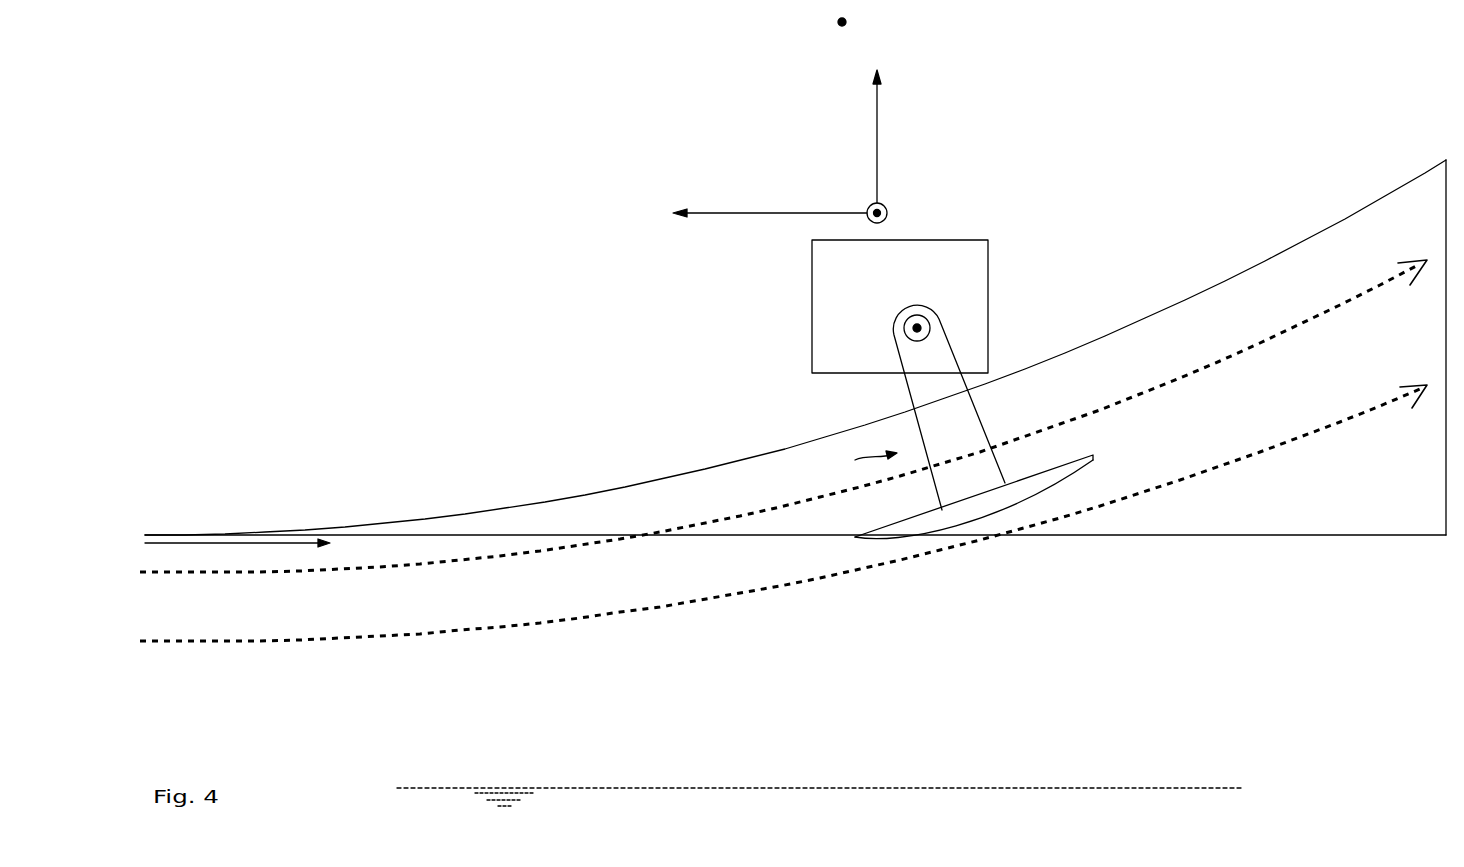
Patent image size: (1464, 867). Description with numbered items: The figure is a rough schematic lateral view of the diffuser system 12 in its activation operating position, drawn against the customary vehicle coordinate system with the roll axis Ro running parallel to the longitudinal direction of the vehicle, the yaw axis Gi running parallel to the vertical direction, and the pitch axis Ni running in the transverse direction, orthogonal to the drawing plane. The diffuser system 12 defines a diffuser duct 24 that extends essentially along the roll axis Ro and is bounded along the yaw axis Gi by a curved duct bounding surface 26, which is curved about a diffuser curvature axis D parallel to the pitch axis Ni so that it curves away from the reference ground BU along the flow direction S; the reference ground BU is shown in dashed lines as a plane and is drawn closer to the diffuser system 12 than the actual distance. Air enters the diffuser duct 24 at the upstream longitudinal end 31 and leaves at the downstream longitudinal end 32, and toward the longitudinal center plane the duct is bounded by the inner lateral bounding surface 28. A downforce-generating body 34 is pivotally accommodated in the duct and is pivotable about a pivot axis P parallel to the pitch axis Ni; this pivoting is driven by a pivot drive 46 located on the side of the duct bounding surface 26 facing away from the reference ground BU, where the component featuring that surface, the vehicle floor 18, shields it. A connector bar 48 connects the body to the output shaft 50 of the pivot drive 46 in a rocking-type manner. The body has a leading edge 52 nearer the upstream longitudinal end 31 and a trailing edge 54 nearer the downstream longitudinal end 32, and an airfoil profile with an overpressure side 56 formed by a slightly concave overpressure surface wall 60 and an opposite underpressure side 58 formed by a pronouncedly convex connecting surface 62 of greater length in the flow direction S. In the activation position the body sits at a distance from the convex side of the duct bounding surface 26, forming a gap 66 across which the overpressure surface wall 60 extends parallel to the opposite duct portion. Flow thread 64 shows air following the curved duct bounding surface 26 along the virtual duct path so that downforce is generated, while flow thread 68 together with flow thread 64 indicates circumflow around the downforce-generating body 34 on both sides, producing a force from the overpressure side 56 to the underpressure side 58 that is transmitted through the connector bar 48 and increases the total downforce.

The diffuser system 12 is at (408, 587).
The vehicle floor 18 is at (735, 537).
The diffuser duct 24 is at (1246, 414).
The duct bounding surface 26 is at (1088, 346).
The inner lateral bounding surface 28 is at (1250, 502).
The upstream longitudinal end 31 is at (296, 548).
The downstream longitudinal end 32 is at (1442, 191).
The downforce-generating body 34 is at (973, 516).
The pivot drive 46 is at (968, 273).
The connector bar 48 is at (923, 388).
The output shaft 50 is at (907, 314).
The leading edge 52 is at (858, 540).
The trailing edge 54 is at (1092, 455).
The overpressure side 56 is at (893, 524).
The underpressure side 58 is at (1027, 490).
The overpressure surface wall 60 is at (955, 505).
The connecting surface 62 is at (893, 543).
The flow thread 64 is at (538, 550).
The gap 66 is at (862, 462).
The flow thread 68 is at (575, 620).
The flow direction S is at (218, 548).
The diffuser curvature axis D is at (838, 24).
The yaw axis Gi is at (878, 86).
The pitch axis Ni is at (887, 208).
The roll axis Ro is at (744, 215).
The pivot axis P is at (906, 328).
The reference ground BU is at (978, 788).